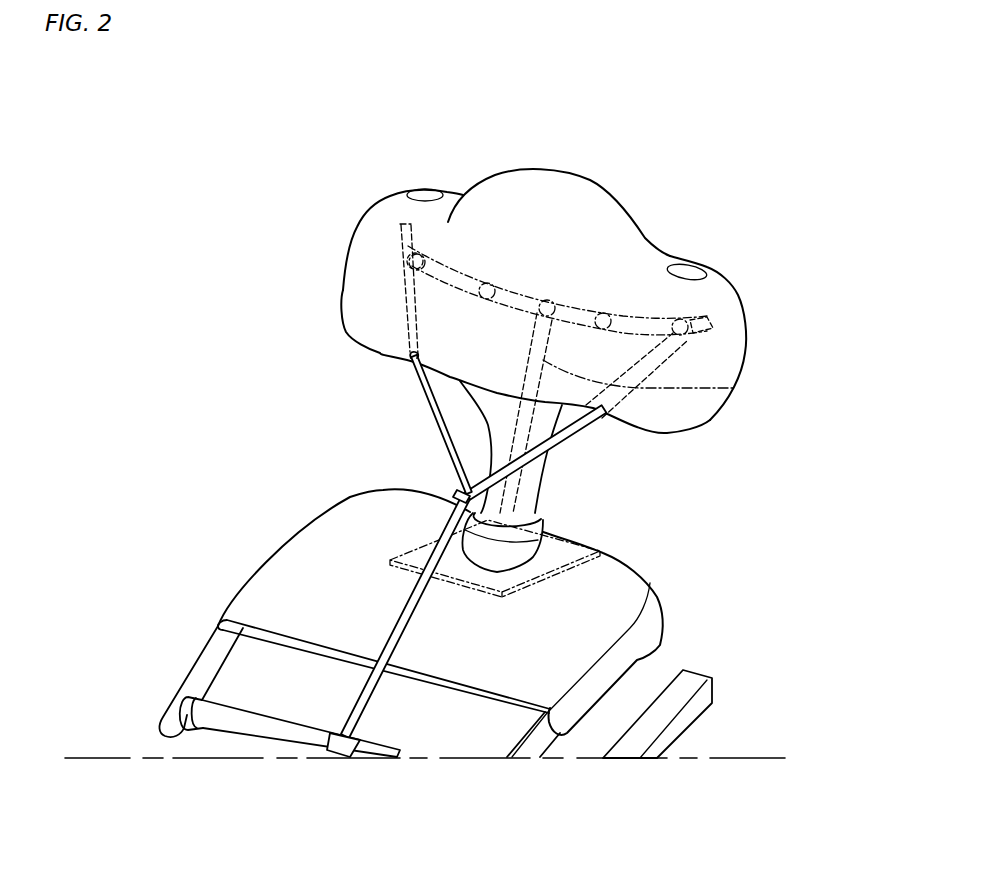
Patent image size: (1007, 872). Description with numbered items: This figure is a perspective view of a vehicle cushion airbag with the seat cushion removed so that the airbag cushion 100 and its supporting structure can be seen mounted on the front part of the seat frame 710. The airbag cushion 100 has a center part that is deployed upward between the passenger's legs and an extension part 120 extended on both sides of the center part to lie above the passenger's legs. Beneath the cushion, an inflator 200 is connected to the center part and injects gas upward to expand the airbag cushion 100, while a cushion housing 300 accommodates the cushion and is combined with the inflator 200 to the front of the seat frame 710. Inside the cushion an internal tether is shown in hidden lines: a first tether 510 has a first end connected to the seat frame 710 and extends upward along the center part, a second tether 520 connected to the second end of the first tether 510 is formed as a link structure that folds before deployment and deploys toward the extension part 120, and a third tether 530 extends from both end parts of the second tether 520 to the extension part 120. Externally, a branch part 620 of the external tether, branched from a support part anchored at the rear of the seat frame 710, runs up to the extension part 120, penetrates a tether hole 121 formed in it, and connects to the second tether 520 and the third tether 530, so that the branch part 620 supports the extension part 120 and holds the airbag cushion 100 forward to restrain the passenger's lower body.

The airbag cushion 100 is at (748, 354).
The extension part 120 is at (378, 200).
The tether hole 121 is at (425, 195).
The inflator 200 is at (576, 552).
The cushion housing 300 is at (547, 531).
The first tether 510 is at (743, 387).
The second tether 520 is at (628, 327).
The third tether 530 is at (712, 322).
The branch part 620 is at (437, 413).
The seat frame 710 is at (674, 600).